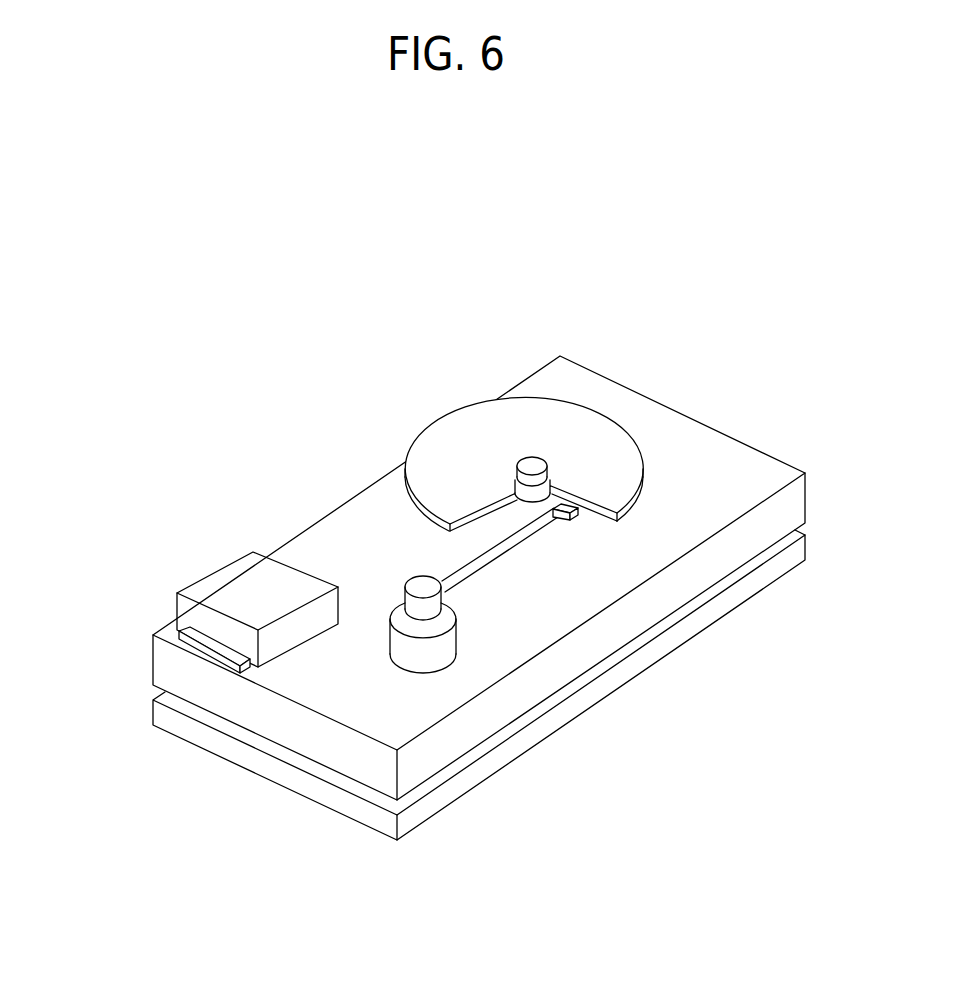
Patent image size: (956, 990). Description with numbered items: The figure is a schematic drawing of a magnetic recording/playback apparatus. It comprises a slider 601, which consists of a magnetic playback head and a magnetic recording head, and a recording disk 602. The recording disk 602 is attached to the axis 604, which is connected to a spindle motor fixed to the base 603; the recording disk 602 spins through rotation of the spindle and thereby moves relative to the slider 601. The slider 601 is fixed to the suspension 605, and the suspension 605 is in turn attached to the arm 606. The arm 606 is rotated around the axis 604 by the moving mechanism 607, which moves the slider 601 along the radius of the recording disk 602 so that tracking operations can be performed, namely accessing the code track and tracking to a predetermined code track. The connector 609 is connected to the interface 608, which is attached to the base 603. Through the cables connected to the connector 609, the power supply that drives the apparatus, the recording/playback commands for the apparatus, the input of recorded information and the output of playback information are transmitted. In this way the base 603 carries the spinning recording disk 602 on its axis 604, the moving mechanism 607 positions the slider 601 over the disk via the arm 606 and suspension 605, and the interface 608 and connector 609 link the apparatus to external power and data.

The slider 601 is at (652, 565).
The recording disk 602 is at (575, 403).
The base 603 is at (479, 685).
The axis 604 is at (532, 397).
The suspension 605 is at (573, 515).
The arm 606 is at (553, 530).
The moving mechanism 607 is at (437, 648).
The interface 608 is at (255, 590).
The connector 609 is at (197, 648).